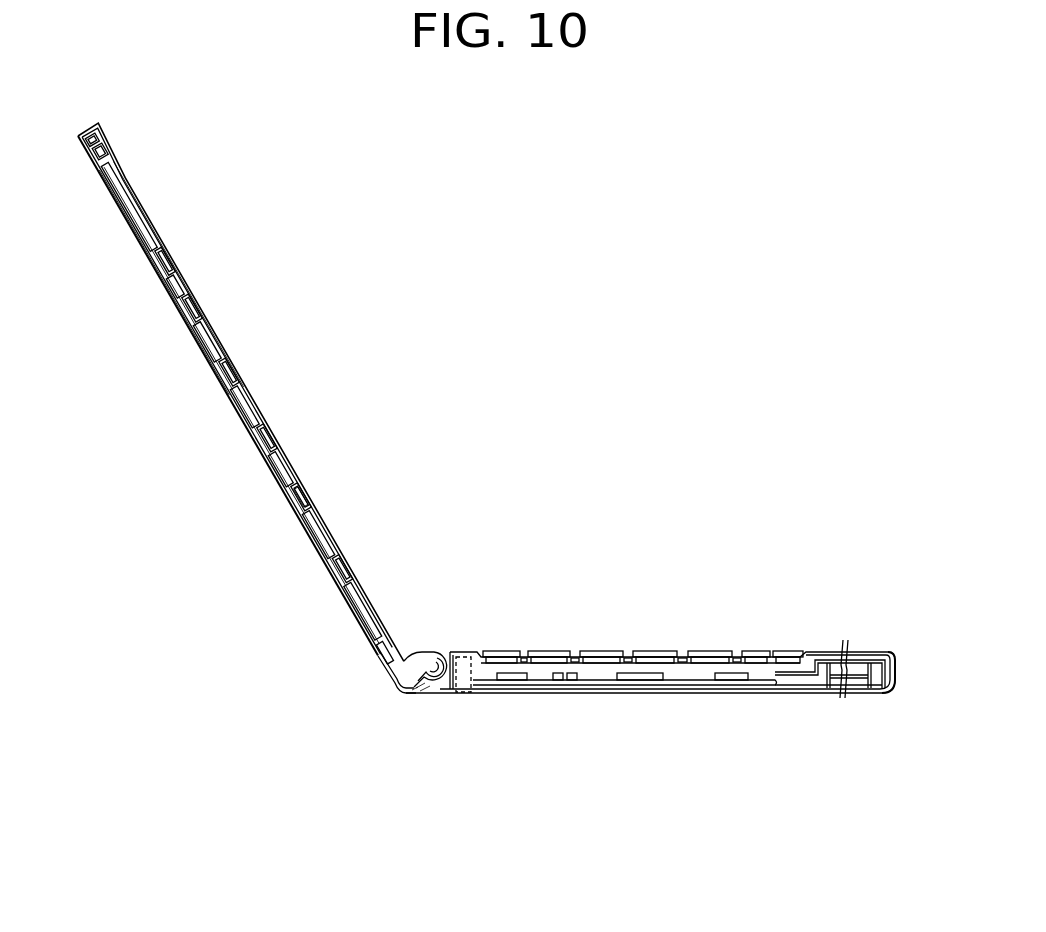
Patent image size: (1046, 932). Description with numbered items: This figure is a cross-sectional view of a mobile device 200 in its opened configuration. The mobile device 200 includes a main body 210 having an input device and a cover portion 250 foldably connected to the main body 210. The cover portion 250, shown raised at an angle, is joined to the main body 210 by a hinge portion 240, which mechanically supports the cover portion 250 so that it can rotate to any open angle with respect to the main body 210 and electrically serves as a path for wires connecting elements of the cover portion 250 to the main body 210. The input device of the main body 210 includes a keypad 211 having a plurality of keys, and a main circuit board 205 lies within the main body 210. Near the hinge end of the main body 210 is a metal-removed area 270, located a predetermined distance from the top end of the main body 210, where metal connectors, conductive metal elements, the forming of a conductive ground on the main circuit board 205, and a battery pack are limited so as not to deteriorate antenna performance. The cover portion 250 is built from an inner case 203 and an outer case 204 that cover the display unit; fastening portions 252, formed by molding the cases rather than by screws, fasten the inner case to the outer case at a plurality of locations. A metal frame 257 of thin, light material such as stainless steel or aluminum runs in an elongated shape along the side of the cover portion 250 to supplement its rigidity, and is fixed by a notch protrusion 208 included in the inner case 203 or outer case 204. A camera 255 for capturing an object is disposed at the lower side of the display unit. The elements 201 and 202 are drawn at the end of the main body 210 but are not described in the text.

The mobile device 200 is at (531, 356).
The main body frame 201 is at (863, 652).
The main body case edge 202 is at (895, 688).
The inner case 203 is at (143, 197).
The outer case 204 is at (122, 215).
The main circuit board 205 is at (605, 686).
The notch protrusion 208 is at (257, 447).
The main body 210 is at (750, 650).
The keypad 211 is at (655, 651).
The hinge portion 240 is at (431, 669).
The cover portion 250 is at (309, 426).
The fastening portions 252 is at (241, 362).
The camera 255 is at (377, 655).
The metal frame 257 is at (148, 237).
The metal-removed area 270 is at (456, 694).